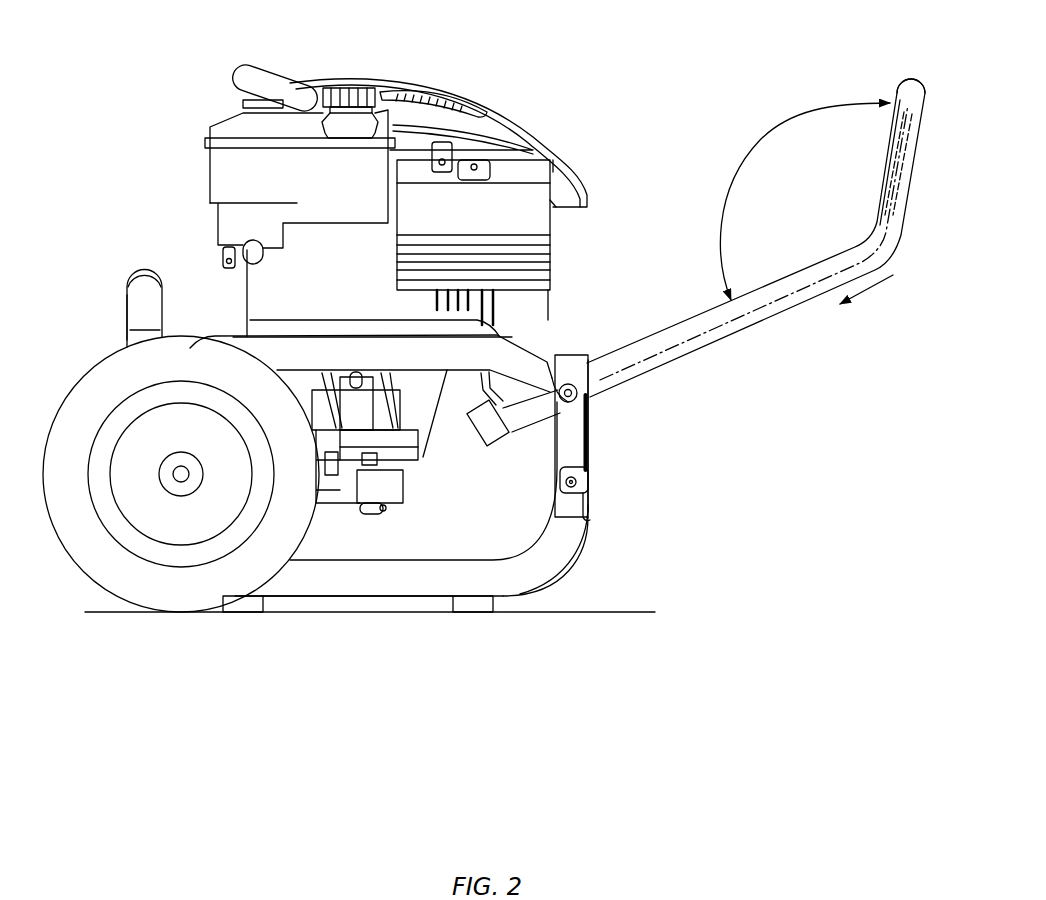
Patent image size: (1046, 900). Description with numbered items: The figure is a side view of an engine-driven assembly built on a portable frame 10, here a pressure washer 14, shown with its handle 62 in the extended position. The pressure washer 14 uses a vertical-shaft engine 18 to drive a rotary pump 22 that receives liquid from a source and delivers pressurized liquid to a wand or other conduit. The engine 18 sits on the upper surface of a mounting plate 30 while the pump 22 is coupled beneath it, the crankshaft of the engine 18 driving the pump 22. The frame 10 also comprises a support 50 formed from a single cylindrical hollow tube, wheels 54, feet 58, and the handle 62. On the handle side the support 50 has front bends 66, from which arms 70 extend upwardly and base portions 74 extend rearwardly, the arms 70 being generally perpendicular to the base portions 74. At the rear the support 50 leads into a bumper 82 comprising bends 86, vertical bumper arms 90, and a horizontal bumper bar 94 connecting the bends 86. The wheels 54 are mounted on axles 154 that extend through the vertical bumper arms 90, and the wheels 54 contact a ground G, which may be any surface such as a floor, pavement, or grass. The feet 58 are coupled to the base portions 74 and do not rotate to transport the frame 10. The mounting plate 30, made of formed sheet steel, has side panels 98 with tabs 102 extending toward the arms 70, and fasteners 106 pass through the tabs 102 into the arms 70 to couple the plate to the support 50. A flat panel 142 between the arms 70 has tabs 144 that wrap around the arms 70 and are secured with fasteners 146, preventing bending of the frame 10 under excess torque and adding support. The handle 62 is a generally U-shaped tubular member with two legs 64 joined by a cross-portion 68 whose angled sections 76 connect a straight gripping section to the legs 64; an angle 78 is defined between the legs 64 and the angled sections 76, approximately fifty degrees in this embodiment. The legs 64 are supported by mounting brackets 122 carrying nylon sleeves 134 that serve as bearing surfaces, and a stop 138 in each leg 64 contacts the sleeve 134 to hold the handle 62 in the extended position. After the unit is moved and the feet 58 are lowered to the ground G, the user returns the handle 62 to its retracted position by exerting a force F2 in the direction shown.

The portable frame 10 is at (594, 548).
The pressure washer 14 is at (165, 100).
The vertical-shaft engine 18 is at (530, 200).
The rotary pump 22 is at (393, 450).
The mounting plate 30 is at (230, 333).
The support 50 is at (430, 598).
The wheels 54 is at (137, 582).
The feet 58 is at (247, 605).
The handle 62 is at (793, 313).
The legs 64 is at (713, 333).
The front bends 66 is at (537, 573).
The cross-portion 68 is at (892, 78).
The arms 70 is at (590, 425).
The base portions 74 is at (380, 583).
The angled sections 76 is at (903, 177).
The angle 78 is at (788, 128).
The bumper 82 is at (126, 309).
The bends 86 is at (157, 290).
The vertical bumper arms 90 is at (137, 327).
The horizontal bumper bar 94 is at (148, 270).
The side panels 98 is at (390, 466).
The tabs 102 is at (557, 362).
The fasteners 106 is at (566, 402).
The mounting brackets 122 is at (482, 390).
The sleeve 134 is at (511, 444).
The stop 138 is at (492, 440).
The flat panel 142 is at (590, 440).
The tabs 144 is at (592, 525).
The fasteners 146 is at (590, 482).
The axles 154 is at (173, 478).
The ground G is at (640, 613).
The force F2 is at (870, 299).